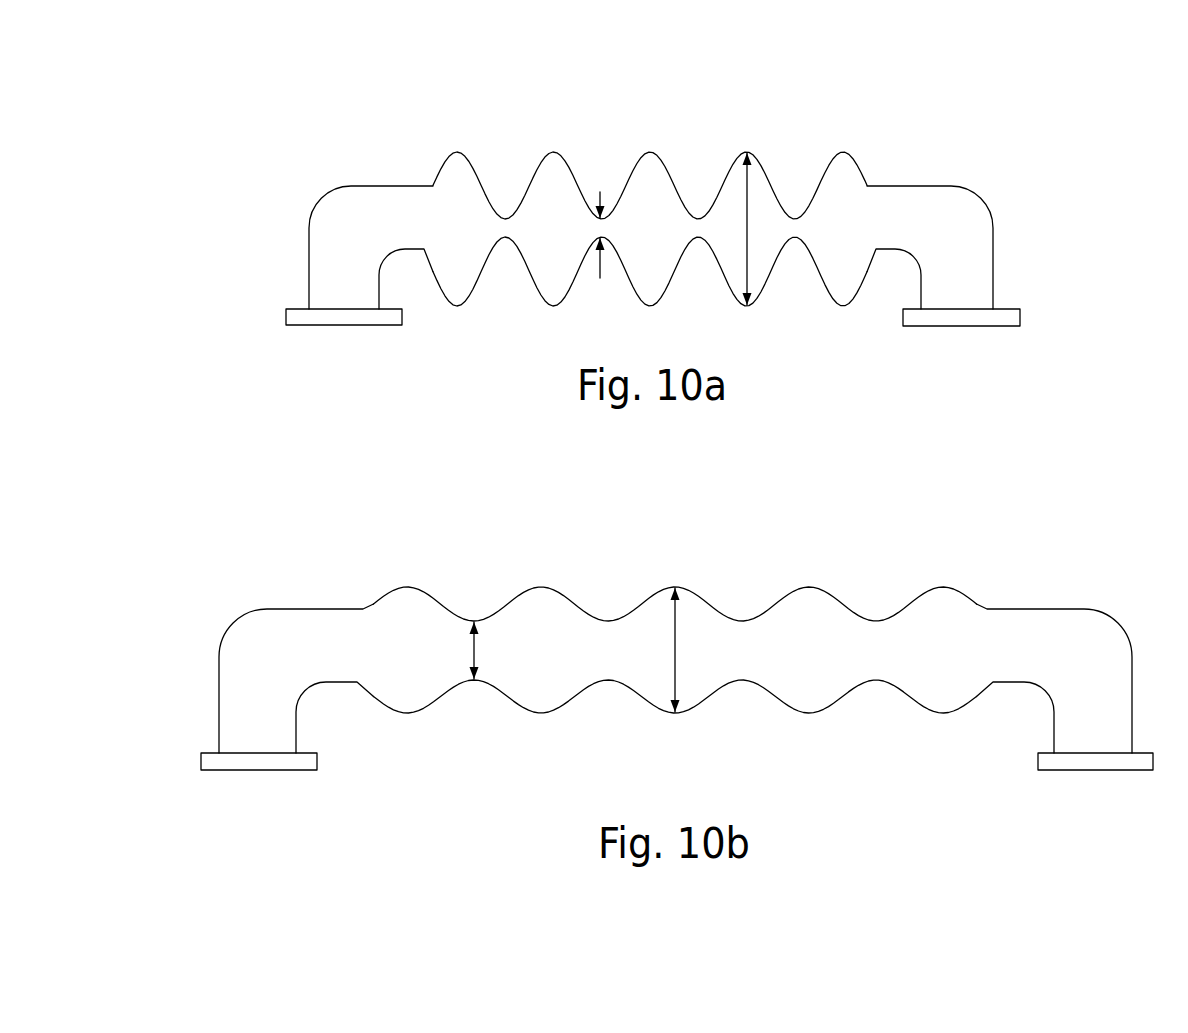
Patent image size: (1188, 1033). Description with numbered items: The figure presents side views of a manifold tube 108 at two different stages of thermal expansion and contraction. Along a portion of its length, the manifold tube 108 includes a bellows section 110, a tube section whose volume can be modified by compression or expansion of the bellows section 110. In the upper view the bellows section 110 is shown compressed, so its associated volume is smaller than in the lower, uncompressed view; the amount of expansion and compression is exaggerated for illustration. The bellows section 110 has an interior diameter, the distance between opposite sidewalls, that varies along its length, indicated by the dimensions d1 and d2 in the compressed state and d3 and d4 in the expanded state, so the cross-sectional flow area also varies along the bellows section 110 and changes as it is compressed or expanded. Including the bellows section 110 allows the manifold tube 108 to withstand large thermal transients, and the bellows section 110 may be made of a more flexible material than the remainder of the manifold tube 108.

In FIG. 10A, the manifold tube 108 is at (322, 196).
In FIG. 10B, the manifold tube 108 is at (242, 616).
In FIG. 10A, the bellows section 110 is at (650, 174).
In FIG. 10B, the bellows section 110 is at (674, 597).
In FIG. 10A, the interior diameter (minimum distance between opposite sidewalls) d1 is at (601, 247).
In FIG. 10A, the interior diameter (maximum distance between opposite sidewalls) d2 is at (730, 229).
In FIG. 10B, the minimum spacing between corrugations (second embodiment) d3 is at (488, 650).
In FIG. 10B, the maximum spacing between corrugations (second embodiment) d4 is at (690, 650).